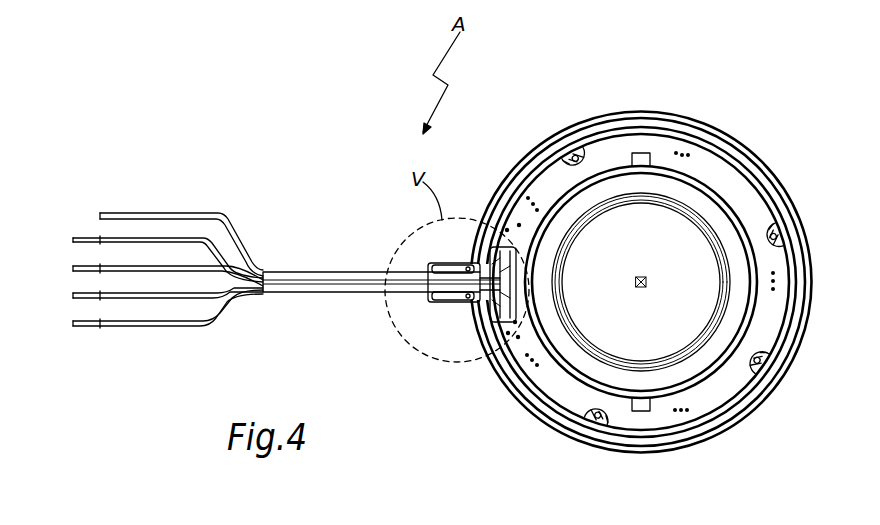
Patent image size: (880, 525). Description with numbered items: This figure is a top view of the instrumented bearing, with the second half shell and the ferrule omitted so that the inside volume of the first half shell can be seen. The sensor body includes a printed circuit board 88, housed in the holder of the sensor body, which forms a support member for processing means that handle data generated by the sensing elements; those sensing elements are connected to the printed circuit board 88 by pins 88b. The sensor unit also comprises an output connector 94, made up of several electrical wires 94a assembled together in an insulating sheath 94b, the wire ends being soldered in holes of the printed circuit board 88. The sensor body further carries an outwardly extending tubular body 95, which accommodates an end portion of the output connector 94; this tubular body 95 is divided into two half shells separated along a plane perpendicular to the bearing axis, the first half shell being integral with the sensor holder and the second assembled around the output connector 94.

The printed circuit board 88 is at (617, 152).
The pins 88b is at (676, 153).
The output connector 94 is at (302, 292).
The electrical wires 94a is at (160, 267).
The insulating sheath 94b is at (309, 266).
The tubular body 95 is at (440, 302).